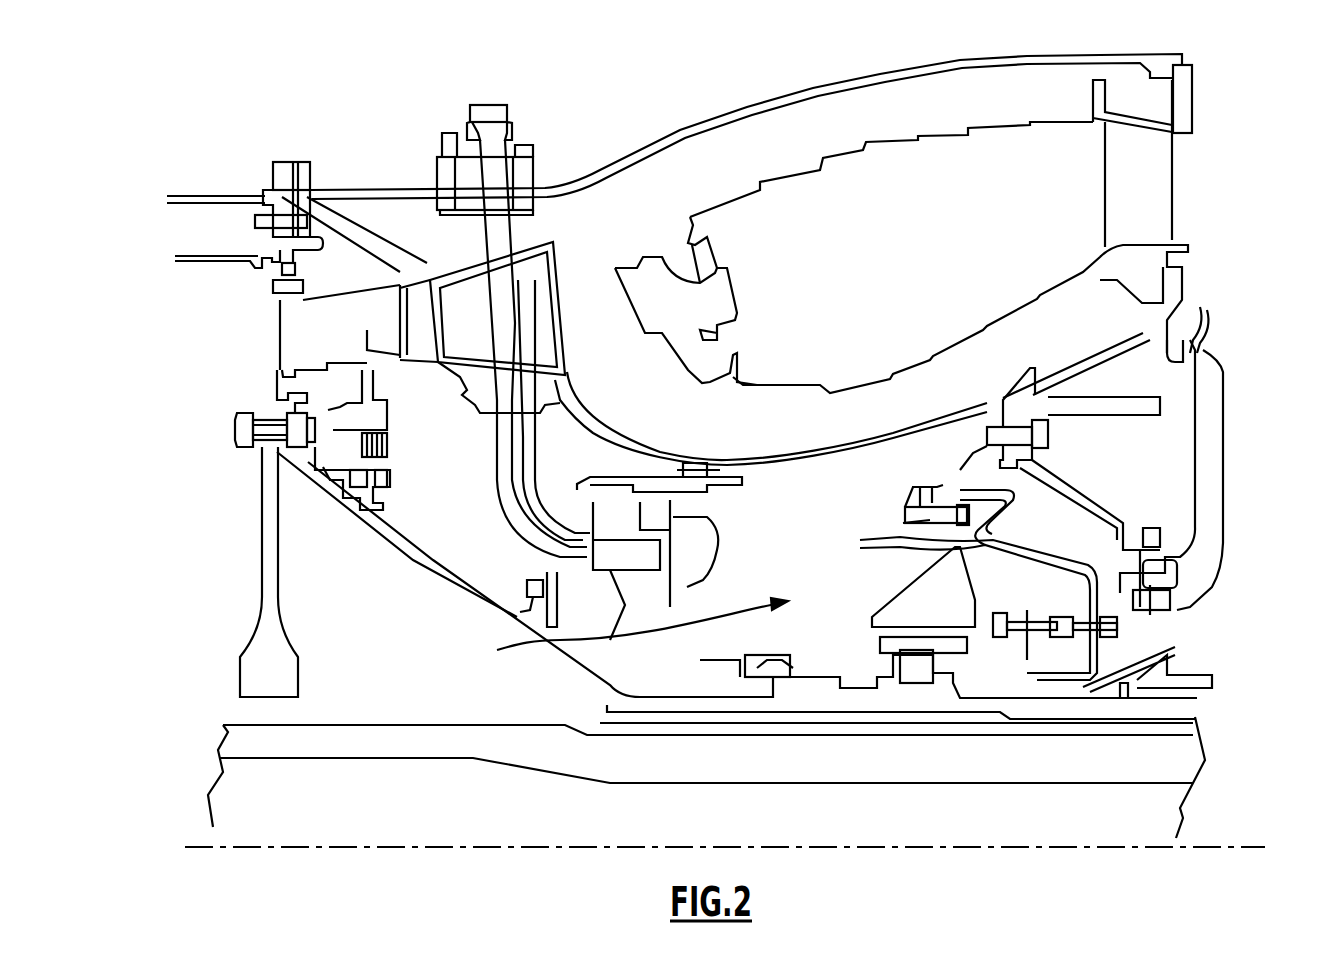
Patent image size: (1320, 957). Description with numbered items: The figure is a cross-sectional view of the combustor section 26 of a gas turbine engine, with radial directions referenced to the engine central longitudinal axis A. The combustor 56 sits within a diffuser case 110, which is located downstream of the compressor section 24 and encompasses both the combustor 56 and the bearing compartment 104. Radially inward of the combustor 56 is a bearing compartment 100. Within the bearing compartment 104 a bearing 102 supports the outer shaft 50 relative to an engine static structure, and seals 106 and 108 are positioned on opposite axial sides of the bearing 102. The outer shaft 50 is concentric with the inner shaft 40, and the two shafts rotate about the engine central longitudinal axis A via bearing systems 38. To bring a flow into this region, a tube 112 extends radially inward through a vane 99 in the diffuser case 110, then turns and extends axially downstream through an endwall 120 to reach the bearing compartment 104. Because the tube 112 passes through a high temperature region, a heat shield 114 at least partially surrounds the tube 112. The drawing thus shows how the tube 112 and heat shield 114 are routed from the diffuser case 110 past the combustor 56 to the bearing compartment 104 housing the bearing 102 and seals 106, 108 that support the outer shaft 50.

The compressor section 24 is at (181, 193).
The combustor section 26 is at (911, 62).
The combustor 56 is at (901, 251).
The diffuser case 110 is at (413, 257).
The vane 99 is at (555, 272).
The heat shield 114 is at (497, 436).
The tube 112 is at (520, 452).
The bearing compartment 100 is at (753, 472).
The endwall 120 is at (575, 485).
The outer shaft 50 is at (430, 583).
The bearing systems 38 is at (627, 619).
The seal 108 is at (745, 660).
The bearing 102 is at (907, 672).
The bearing compartment 104 is at (1001, 592).
The seal 106 is at (1017, 653).
The inner shaft 40 is at (695, 768).
The engine central longitudinal axis A is at (1262, 847).